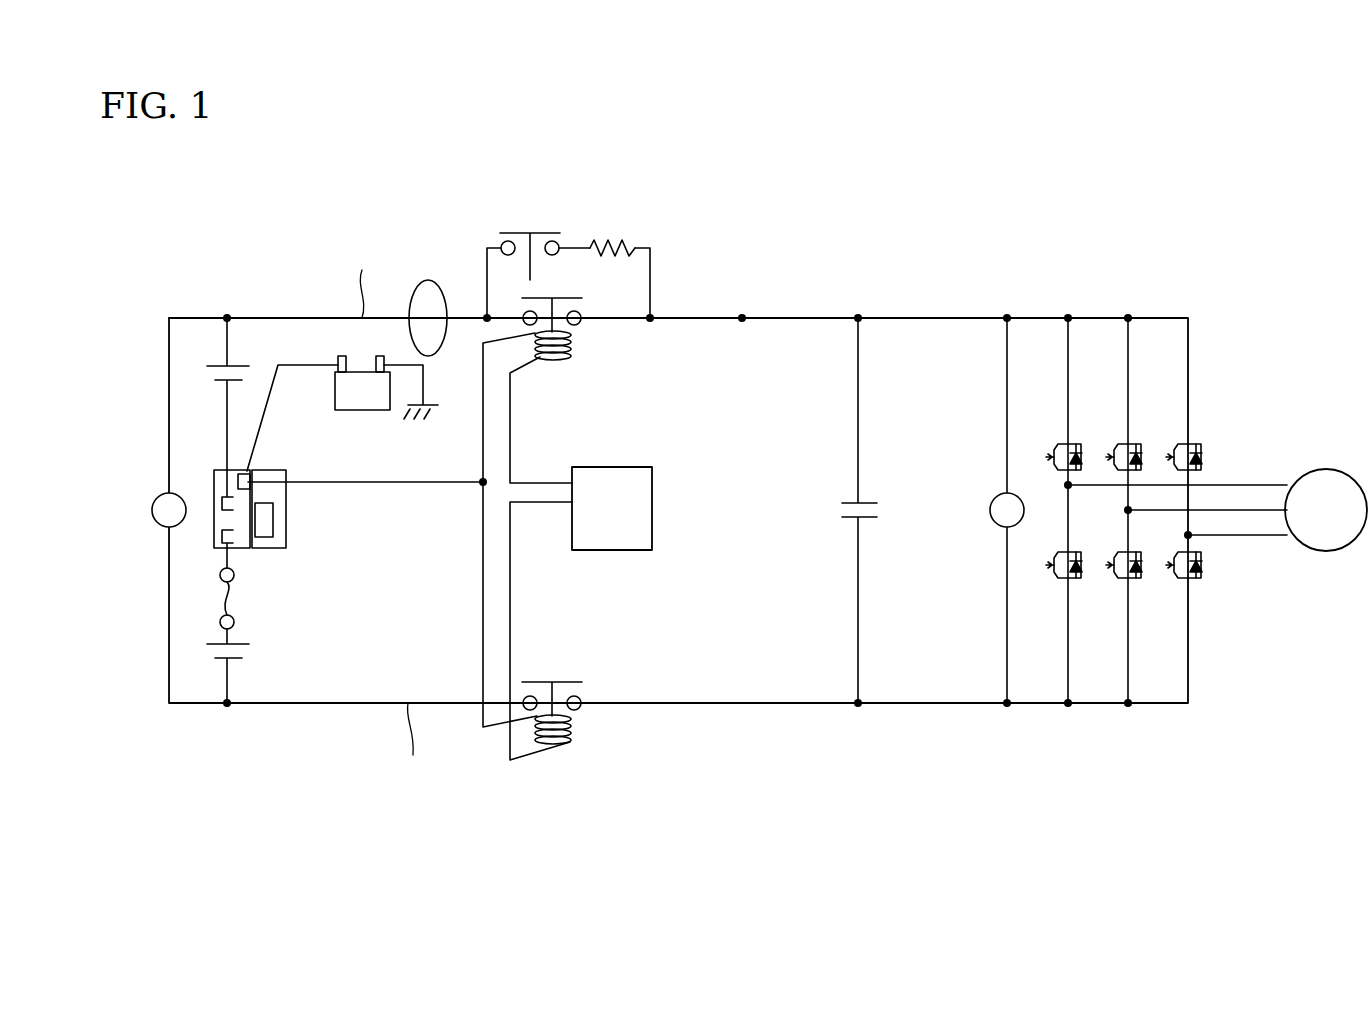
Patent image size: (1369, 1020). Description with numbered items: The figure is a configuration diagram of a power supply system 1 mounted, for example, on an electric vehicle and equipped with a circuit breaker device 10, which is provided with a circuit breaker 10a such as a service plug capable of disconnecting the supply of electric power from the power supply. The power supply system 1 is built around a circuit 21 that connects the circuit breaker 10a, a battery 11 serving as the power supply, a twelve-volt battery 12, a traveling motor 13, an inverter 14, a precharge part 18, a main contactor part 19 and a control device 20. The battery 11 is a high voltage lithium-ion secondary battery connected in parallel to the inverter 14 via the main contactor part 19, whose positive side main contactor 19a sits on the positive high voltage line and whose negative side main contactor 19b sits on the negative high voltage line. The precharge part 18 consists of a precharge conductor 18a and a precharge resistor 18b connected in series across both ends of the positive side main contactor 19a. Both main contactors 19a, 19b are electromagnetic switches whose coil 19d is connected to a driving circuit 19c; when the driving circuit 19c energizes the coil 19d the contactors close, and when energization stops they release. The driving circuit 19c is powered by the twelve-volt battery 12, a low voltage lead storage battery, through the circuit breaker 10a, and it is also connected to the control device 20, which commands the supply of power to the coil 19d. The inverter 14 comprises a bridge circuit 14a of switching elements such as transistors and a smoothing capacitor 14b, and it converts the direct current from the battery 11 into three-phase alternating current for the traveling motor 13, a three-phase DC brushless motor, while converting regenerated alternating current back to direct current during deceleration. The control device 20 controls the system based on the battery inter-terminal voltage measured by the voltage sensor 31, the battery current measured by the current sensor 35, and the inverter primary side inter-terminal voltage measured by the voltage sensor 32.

The power supply system 1 is at (1235, 222).
The circuit breaker device 10 is at (247, 439).
The circuit breaker 10a is at (283, 562).
The battery 11 is at (216, 355).
The 12V battery 12 is at (341, 350).
The traveling motor 13 is at (1325, 470).
The inverter 14 is at (1052, 450).
The bridge circuit 14a is at (1153, 473).
The smoothing capacitor 14b is at (862, 500).
The precharge part 18 is at (568, 225).
The precharge conductor 18a is at (543, 232).
The precharge resistor 18b is at (620, 217).
The main contactor part 19 is at (448, 530).
The positive side main contactor 19a is at (565, 298).
The negative side main contactor 19b is at (560, 682).
The driving circuit 19c is at (483, 449).
The coil 19d is at (575, 350).
The control device 20 is at (618, 466).
The circuit 21 is at (167, 310).
The voltage sensor 31 is at (155, 496).
The voltage sensor 32 is at (992, 500).
The current sensor 35 is at (447, 300).